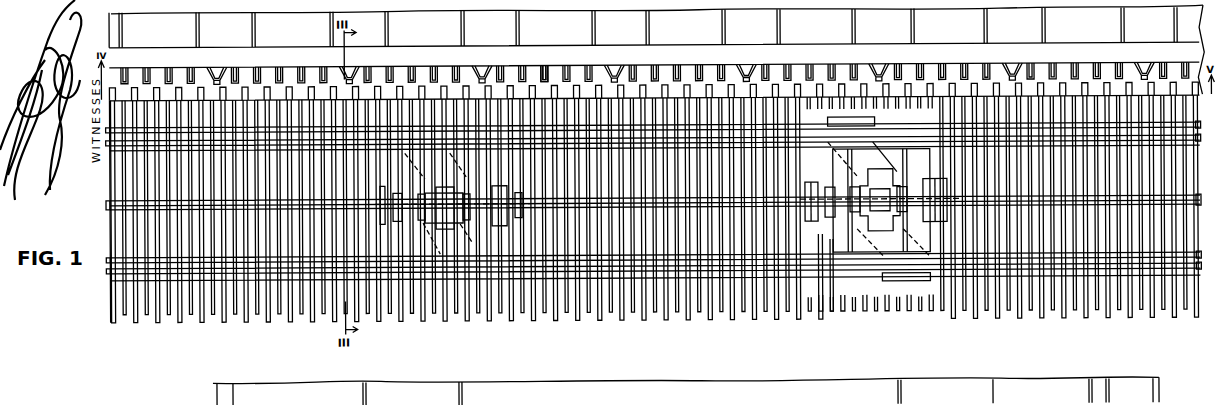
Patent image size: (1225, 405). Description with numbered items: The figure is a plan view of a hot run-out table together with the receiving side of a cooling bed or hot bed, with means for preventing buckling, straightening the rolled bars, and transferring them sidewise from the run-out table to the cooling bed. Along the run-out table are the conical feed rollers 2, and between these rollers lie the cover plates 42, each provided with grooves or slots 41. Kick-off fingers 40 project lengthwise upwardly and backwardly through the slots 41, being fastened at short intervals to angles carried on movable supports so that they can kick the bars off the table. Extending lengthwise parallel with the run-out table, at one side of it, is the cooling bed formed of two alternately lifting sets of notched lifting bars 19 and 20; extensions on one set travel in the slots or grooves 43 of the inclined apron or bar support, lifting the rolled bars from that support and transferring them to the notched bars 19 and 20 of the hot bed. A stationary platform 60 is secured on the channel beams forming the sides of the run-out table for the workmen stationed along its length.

The conical feed roller 2 is at (223, 72).
The lifting bar 19 is at (224, 322).
The lifting bar 20 is at (292, 320).
The kick-off finger 40 is at (548, 81).
The groove or slot 41 is at (550, 81).
The cover plate 42 is at (594, 80).
The slot or groove 43 is at (838, 82).
The stationary platform 60 is at (658, 205).